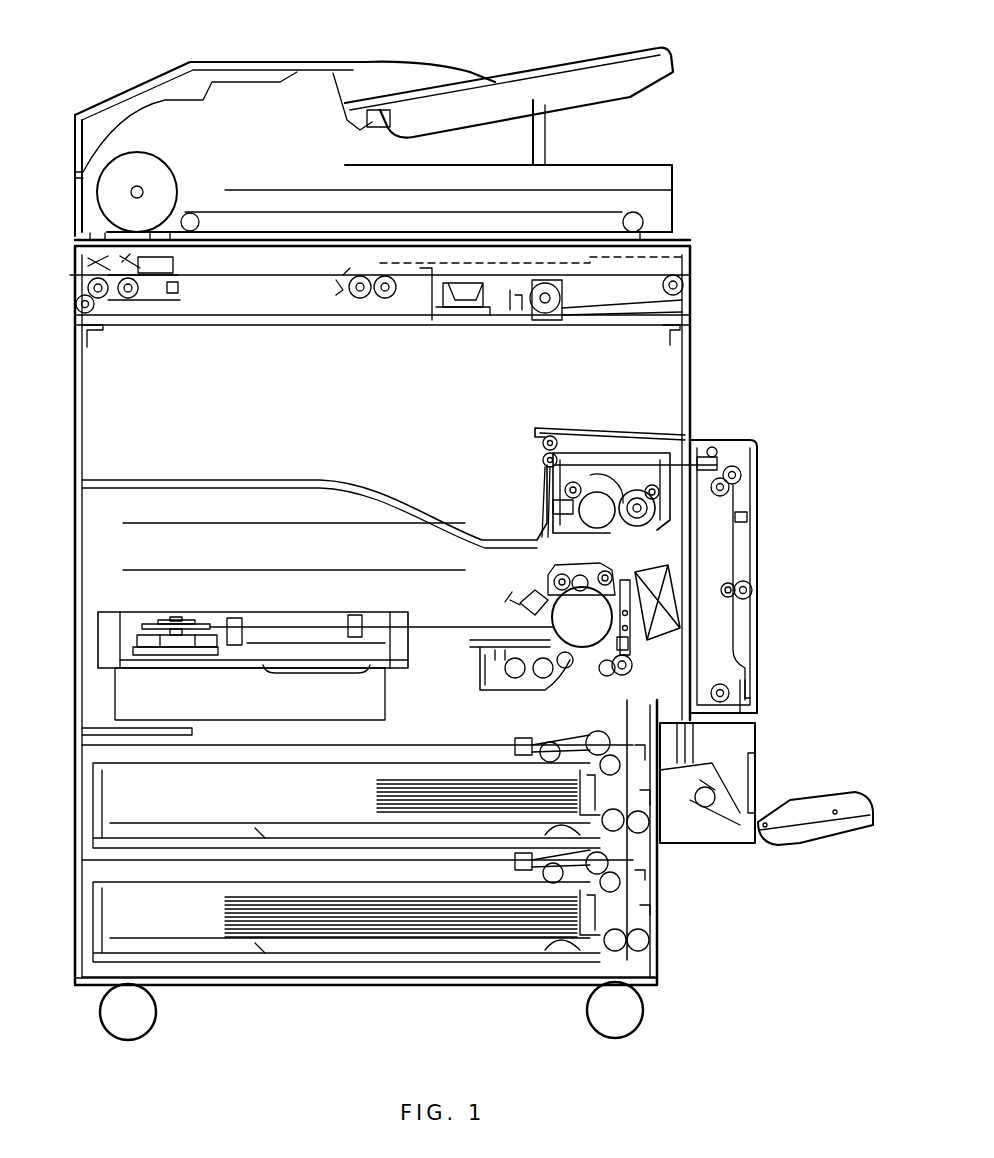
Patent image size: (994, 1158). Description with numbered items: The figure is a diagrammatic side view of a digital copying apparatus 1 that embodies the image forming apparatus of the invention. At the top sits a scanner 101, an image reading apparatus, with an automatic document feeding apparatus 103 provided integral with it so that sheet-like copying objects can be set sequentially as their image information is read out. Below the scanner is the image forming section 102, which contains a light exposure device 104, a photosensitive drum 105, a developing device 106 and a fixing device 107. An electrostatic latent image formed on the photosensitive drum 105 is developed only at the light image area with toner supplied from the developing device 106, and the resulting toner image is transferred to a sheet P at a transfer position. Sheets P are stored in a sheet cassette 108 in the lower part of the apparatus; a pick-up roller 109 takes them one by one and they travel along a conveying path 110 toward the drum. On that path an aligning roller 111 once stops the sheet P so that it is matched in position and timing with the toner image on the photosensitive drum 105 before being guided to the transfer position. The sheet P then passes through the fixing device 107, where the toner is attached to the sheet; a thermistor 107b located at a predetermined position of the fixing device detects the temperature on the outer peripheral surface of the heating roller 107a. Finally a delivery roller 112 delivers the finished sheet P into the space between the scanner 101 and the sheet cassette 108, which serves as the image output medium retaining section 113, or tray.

The digital copying apparatus 1 is at (712, 84).
The scanner 101 is at (213, 292).
The image forming section 102 is at (648, 387).
The automatic document feeding apparatus 103 is at (182, 128).
The light exposure device 104 is at (215, 600).
The photosensitive drum 105 is at (593, 607).
The developing device 106 is at (538, 675).
The fixing device 107 is at (587, 470).
The heating roller 107a is at (585, 514).
The thermistor 107b is at (578, 523).
The sheet cassette 108 is at (310, 776).
The pick-up roller 109 is at (551, 748).
The conveying path 110 is at (690, 728).
The aligning roller 111 is at (601, 672).
The delivery roller 112 is at (544, 441).
The image output medium retaining section 113 is at (265, 479).
The sheet P is at (440, 790).